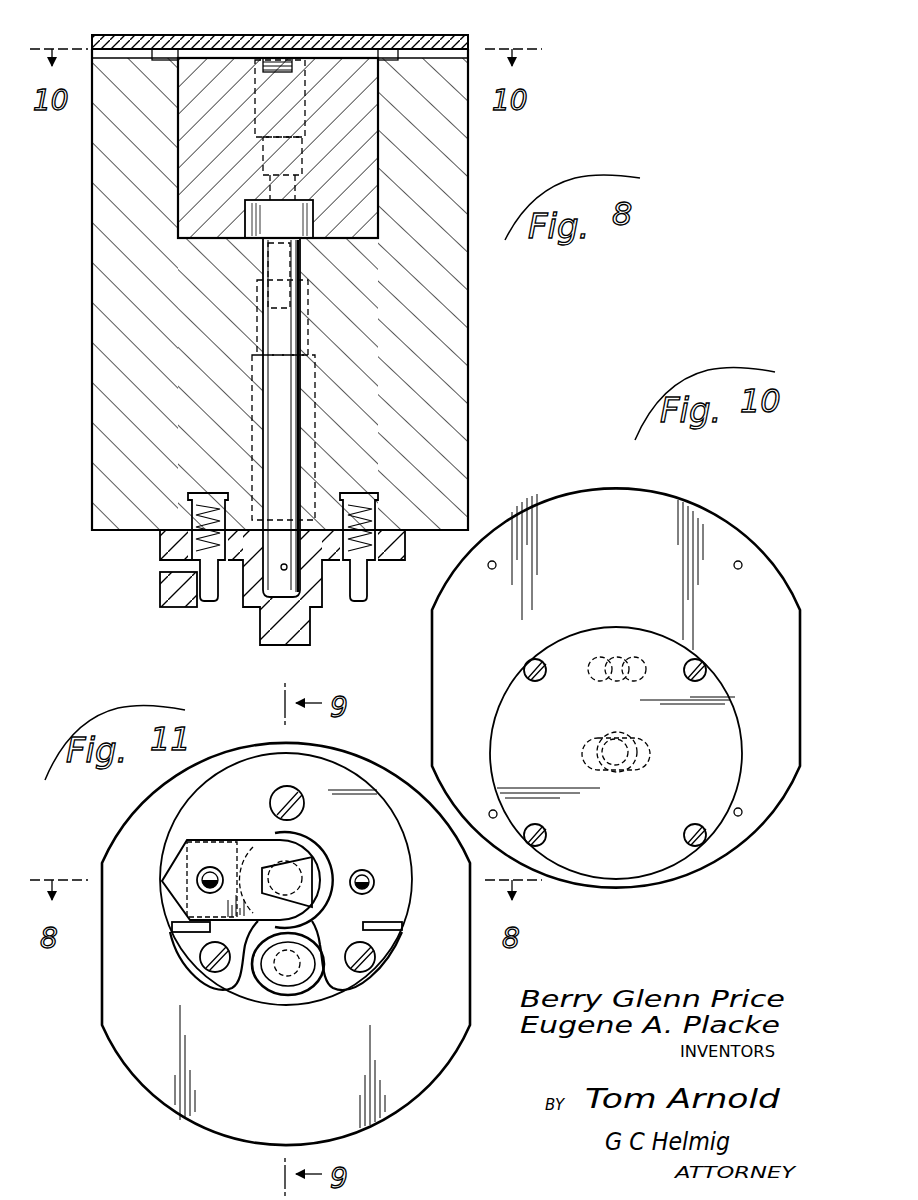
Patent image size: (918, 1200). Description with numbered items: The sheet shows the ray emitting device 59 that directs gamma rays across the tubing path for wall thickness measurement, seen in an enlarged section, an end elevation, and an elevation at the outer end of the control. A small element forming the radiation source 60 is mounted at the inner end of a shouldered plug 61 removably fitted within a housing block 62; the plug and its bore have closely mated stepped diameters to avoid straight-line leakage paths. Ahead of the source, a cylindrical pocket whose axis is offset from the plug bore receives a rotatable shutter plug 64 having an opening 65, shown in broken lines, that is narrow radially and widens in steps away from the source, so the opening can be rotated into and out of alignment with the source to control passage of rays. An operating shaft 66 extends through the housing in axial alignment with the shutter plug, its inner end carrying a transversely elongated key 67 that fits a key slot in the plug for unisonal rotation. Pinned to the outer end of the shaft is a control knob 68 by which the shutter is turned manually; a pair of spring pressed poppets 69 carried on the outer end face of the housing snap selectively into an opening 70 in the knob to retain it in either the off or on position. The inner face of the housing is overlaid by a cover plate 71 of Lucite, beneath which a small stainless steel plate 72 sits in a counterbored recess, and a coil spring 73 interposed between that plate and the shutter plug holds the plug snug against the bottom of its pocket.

In FIG. 8, the ray emitting device 59 is at (84, 346).
In FIG. 8, the radiation source 60 is at (300, 270).
In FIG. 8, the shouldered plug 61 is at (316, 384).
In FIG. 11, the shouldered plug 61 is at (293, 982).
In FIG. 8, the housing block 62 is at (92, 409).
In FIG. 10, the housing block 62 is at (690, 505).
In FIG. 11, the housing block 62 is at (148, 1070).
In FIG. 8, the shutter plug 64 is at (346, 62).
In FIG. 8, the opening 65 is at (305, 162).
In FIG. 10, the opening 65 is at (610, 656).
In FIG. 8, the operating shaft 66 is at (290, 339).
In FIG. 10, the operating shaft 66 is at (607, 742).
In FIG. 8, the key 67 is at (307, 213).
In FIG. 10, the key 67 is at (652, 757).
In FIG. 8, the control knob 68 is at (303, 628).
In FIG. 11, the control knob 68 is at (247, 850).
In FIG. 8, the spring pressed poppets 69 is at (205, 598).
In FIG. 11, the spring pressed poppets 69 is at (210, 867).
In FIG. 8, the opening 70 is at (216, 607).
In FIG. 8, the cover plate 71 is at (125, 40).
In FIG. 10, the cover plate 71 is at (722, 538).
In FIG. 8, the stainless steel plate 72 is at (183, 50).
In FIG. 10, the stainless steel plate 72 is at (668, 650).
In FIG. 8, the coil spring 73 is at (263, 54).